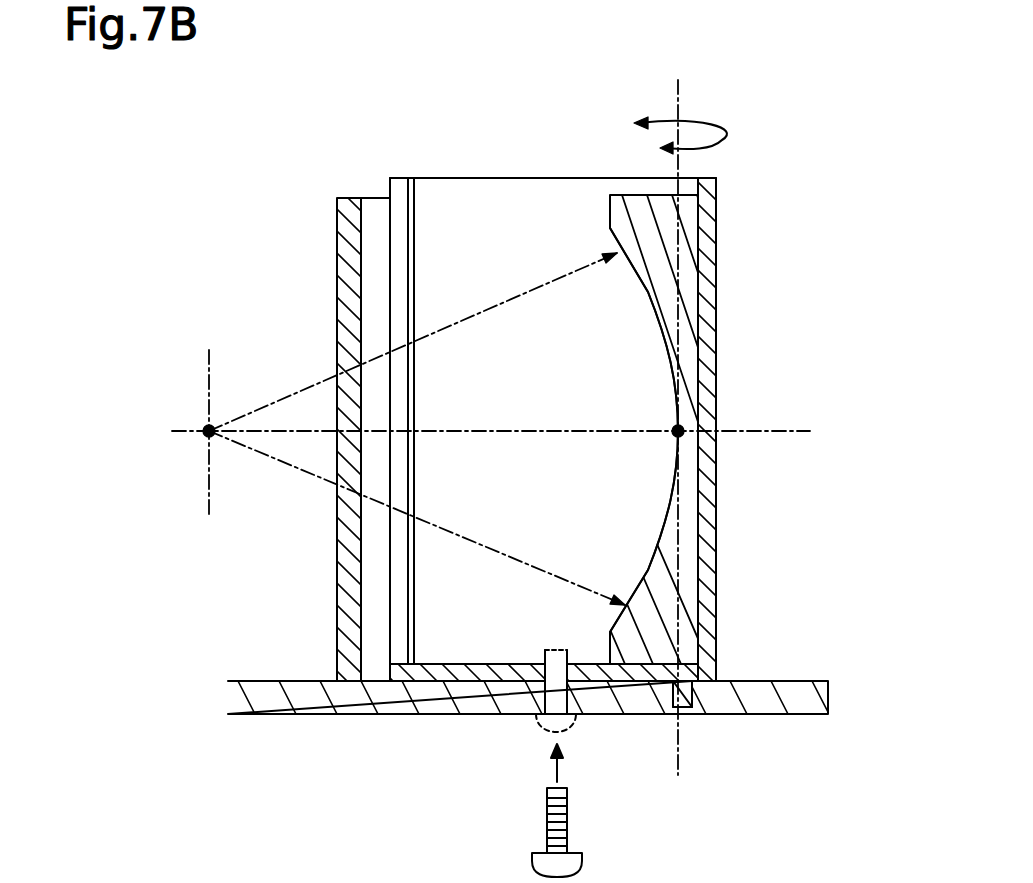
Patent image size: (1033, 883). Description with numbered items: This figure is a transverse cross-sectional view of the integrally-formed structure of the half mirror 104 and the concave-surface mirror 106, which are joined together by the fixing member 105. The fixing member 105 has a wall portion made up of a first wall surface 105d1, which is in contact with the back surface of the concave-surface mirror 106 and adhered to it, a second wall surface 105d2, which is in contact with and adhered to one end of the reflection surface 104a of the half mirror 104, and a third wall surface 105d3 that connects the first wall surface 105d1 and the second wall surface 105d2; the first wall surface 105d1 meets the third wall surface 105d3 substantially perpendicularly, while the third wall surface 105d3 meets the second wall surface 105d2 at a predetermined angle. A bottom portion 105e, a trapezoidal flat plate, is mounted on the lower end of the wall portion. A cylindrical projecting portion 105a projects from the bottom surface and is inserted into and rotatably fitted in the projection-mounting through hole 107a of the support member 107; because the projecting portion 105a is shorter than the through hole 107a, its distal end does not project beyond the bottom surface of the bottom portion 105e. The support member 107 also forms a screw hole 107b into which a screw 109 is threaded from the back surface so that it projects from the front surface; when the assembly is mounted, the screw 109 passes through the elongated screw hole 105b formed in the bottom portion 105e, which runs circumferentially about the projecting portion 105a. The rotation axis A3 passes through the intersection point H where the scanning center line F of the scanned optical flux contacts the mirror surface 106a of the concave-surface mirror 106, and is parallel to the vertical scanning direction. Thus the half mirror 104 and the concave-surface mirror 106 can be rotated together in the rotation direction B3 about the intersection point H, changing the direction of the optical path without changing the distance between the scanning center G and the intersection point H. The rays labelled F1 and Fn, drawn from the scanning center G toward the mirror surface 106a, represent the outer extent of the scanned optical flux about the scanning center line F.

The half mirror 104 is at (340, 280).
The reflection surface 104a is at (371, 206).
The fixing member 105 is at (500, 183).
The projecting portion 105a is at (695, 709).
The screw hole 105b is at (507, 683).
The first wall surface 105d1 is at (717, 535).
The second wall surface 105d2 is at (397, 241).
The third wall surface 105d3 is at (448, 210).
The bottom portion 105e is at (437, 683).
The concave-surface mirror 106 is at (632, 200).
The mirror surface 106a is at (660, 353).
The support member 107 is at (793, 681).
The projection-mounting through hole 107a is at (673, 695).
The screw hole 107b is at (540, 700).
The screw 109 is at (546, 818).
The rotation axis A3 is at (681, 88).
The rotation direction B3 is at (679, 119).
The scanning center line F is at (797, 427).
The first light ray F1 is at (413, 339).
The n-th light ray Fn is at (417, 521).
The scanning center G is at (199, 445).
The intersection point H is at (681, 430).